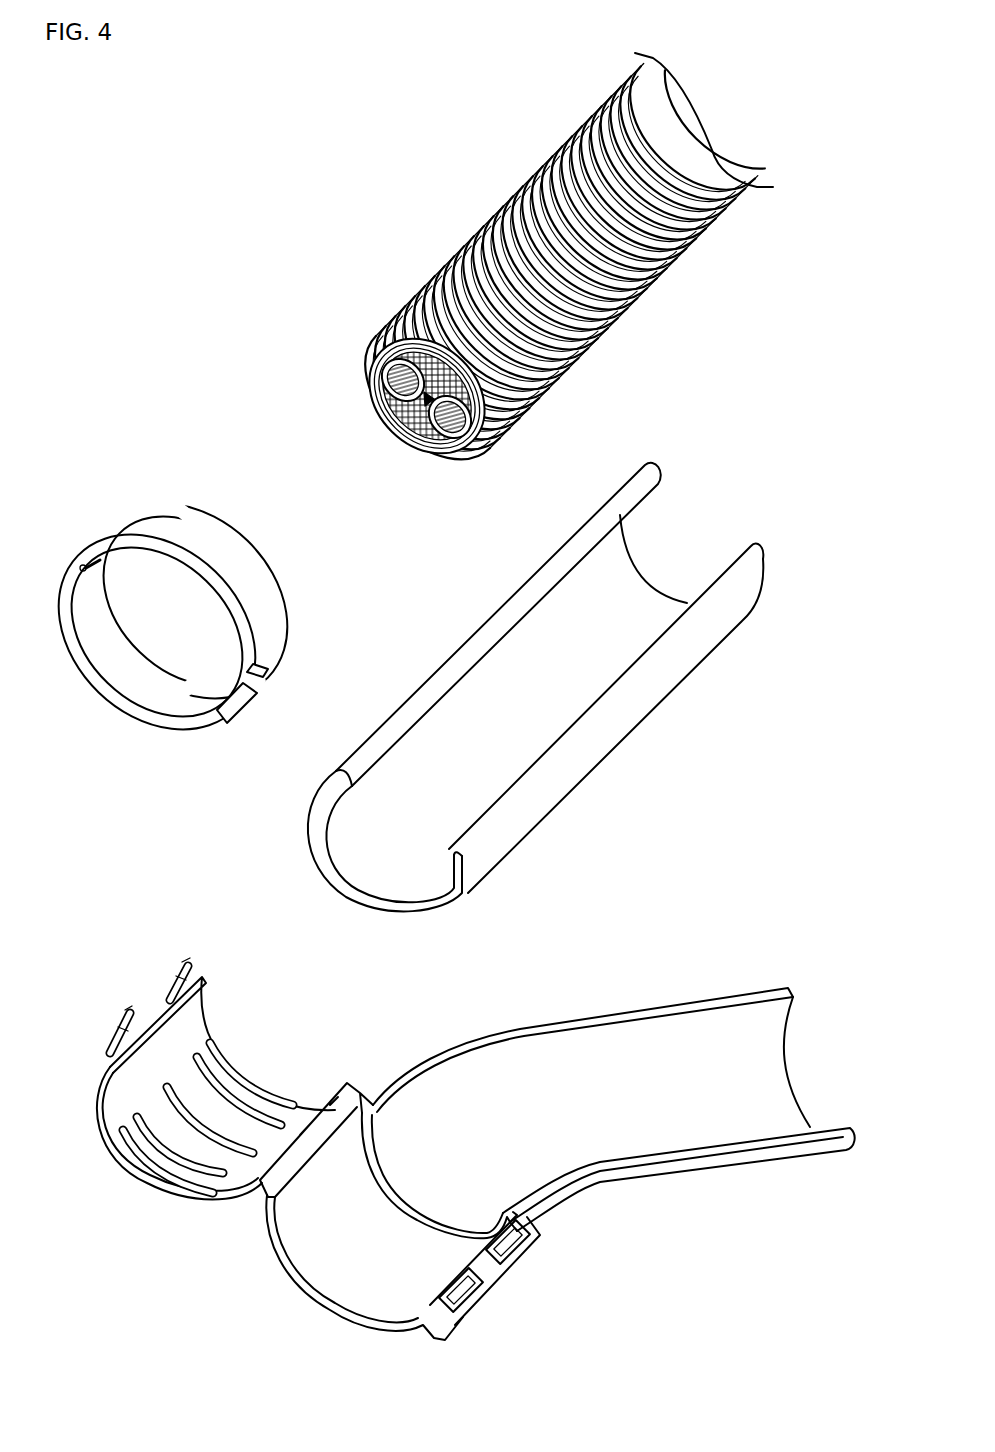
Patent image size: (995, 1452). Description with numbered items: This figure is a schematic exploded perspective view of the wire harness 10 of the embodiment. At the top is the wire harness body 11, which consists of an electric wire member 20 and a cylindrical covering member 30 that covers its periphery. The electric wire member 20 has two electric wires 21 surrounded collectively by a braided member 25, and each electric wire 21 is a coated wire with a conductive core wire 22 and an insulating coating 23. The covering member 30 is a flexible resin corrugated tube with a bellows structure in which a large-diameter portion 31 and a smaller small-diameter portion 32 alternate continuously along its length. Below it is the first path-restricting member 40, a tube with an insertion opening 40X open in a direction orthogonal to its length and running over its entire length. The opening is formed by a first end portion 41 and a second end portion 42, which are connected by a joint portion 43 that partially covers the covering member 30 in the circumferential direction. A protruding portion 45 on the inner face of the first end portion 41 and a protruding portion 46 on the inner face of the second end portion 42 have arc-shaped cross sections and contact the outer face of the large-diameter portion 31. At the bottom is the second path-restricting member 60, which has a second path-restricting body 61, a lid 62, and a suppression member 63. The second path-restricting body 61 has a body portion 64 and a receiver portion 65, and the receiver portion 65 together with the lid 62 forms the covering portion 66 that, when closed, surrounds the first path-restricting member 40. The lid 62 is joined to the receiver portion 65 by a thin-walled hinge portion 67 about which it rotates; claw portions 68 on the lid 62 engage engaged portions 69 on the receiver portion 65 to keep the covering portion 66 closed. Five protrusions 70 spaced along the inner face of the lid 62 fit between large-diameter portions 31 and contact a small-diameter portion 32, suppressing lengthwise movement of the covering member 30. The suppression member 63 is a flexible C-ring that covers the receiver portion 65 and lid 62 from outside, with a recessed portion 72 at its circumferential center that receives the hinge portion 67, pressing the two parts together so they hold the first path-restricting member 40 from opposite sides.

The wire harness 10 is at (234, 157).
The wire harness body 11 is at (485, 224).
The electric wire member 20 is at (504, 520).
The electric wire 21 is at (431, 440).
The core wire 22 is at (380, 410).
The insulating coating 23 is at (402, 418).
The braided member 25 is at (455, 440).
The covering member 30 is at (398, 268).
The large-diameter portion 31 is at (406, 332).
The small-diameter portion 32 is at (378, 326).
The first path-restricting member 40 is at (689, 684).
The insertion opening 40X is at (505, 745).
The first end portion 41 is at (366, 744).
The second end portion 42 is at (459, 840).
The joint portion 43 is at (490, 850).
The protruding portion 45 is at (350, 790).
The protruding portion 46 is at (440, 860).
The second path-restricting member 60 is at (716, 1174).
The second path-restricting body 61 is at (702, 998).
The lid 62 is at (205, 1008).
The suppression member 63 is at (179, 508).
The body portion 64 is at (555, 1016).
The receiver portion 65 is at (410, 1328).
The covering portion 66 is at (165, 1195).
The hinge portion 67 is at (343, 1100).
The claw portion 68 is at (172, 964).
The engaged portion 69 is at (510, 1258).
The protrusion 70 is at (240, 1068).
The recessed portion 72 is at (108, 566).